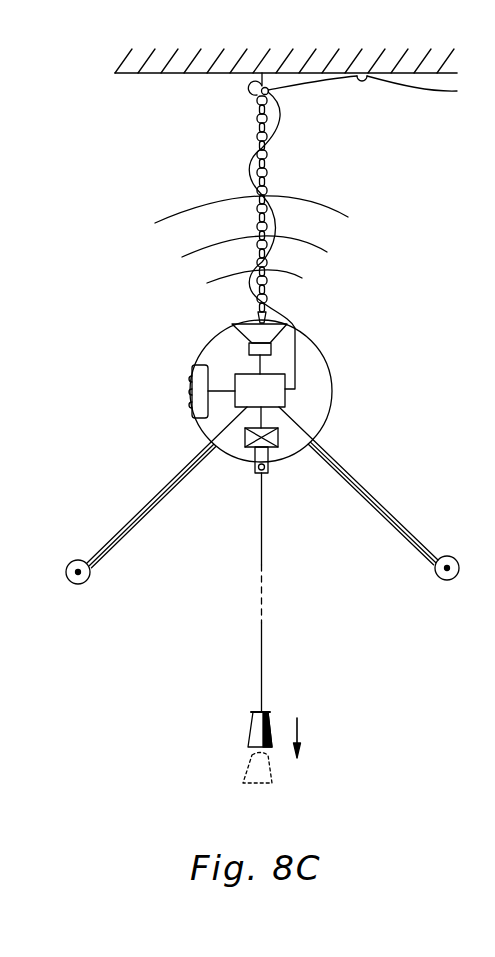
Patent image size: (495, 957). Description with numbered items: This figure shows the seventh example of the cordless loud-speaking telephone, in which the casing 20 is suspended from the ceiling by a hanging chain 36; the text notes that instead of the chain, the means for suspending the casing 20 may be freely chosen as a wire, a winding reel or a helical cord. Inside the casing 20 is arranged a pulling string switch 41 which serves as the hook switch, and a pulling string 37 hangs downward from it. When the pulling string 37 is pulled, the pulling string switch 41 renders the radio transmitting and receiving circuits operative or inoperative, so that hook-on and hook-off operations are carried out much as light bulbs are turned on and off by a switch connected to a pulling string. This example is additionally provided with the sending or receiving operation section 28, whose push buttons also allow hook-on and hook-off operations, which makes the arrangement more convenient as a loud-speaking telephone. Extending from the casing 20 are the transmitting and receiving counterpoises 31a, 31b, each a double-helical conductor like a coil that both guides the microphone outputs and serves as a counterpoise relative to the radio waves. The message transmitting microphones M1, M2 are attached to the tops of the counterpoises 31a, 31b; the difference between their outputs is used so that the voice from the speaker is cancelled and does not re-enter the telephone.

The hanging chain 36 is at (267, 166).
The casing 20 is at (327, 366).
The sending or receiving operation section 28 is at (190, 393).
The pulling string switch 41 is at (254, 458).
The transmitting counterpoise 31a is at (143, 504).
The receiving counterpoise 31b is at (374, 496).
The pulling string 37 is at (263, 644).
The transmitting microphone M1 is at (76, 586).
The receiving microphone M2 is at (444, 586).